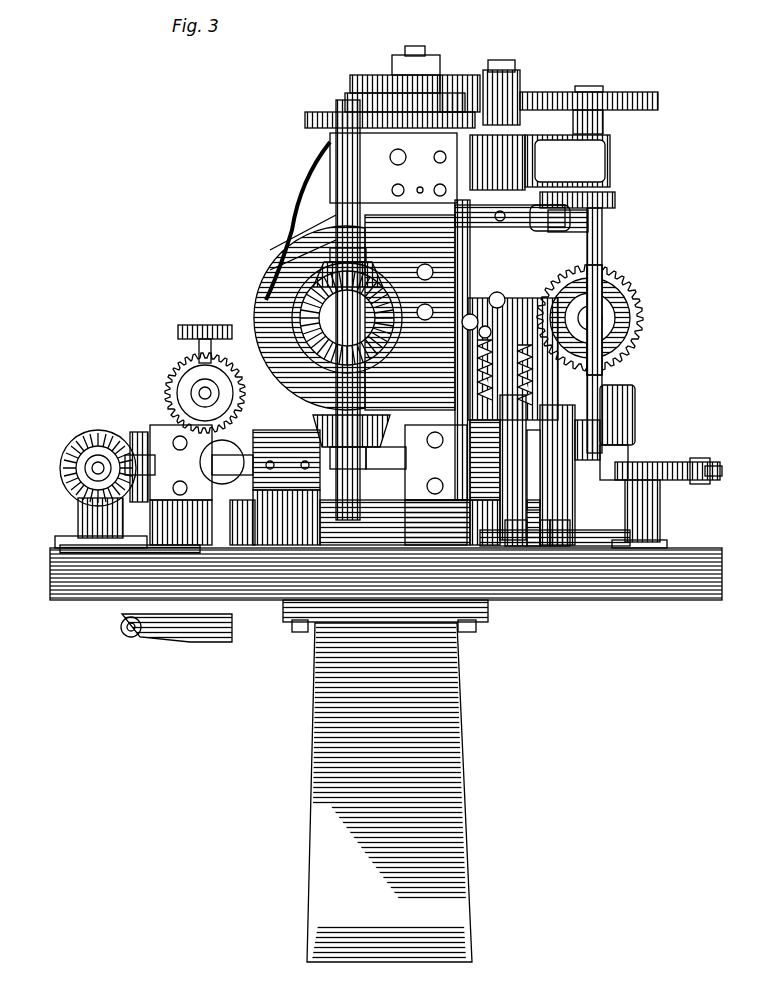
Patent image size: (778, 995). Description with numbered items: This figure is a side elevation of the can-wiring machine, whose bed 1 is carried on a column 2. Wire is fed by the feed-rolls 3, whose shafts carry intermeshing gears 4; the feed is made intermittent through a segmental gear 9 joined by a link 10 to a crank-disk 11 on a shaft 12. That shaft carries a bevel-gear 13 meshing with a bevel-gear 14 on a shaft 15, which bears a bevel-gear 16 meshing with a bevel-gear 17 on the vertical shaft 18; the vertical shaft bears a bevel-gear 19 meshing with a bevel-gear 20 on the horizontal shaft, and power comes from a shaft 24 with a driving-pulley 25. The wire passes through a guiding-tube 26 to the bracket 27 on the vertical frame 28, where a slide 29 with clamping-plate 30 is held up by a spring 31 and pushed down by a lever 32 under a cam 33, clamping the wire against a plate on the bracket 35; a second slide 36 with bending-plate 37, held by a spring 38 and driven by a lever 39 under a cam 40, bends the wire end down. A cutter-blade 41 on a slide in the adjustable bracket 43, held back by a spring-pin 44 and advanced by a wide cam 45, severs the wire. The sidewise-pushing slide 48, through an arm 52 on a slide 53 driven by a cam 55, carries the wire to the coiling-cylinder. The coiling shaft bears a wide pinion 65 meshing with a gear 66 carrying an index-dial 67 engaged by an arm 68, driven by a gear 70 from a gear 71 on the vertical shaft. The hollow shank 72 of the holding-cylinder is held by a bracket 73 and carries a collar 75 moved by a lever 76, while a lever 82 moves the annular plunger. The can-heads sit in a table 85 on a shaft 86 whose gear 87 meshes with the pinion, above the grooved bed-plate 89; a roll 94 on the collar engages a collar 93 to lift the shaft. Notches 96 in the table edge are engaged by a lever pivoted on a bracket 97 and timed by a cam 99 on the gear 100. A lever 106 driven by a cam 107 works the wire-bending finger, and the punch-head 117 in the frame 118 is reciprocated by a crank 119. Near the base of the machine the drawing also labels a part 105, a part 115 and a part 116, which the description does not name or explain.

The bed 1 is at (685, 590).
The column 2 is at (455, 775).
The feed-rolls 3 is at (176, 382).
The intermeshing gears 4 is at (252, 425).
The segmental gear 9 is at (178, 622).
The link 10 is at (120, 606).
The crank-disk 11 is at (84, 434).
The shaft 12 is at (58, 448).
The bevel-gear 13 is at (58, 470).
The bevel-gear 14 is at (138, 434).
The shaft 15 is at (370, 465).
The bevel-gear 16 is at (376, 548).
The bevel-gear 17 is at (350, 455).
The vertical shaft 18 is at (300, 240).
The bevel-gear 19 is at (292, 263).
The bevel-gear 20 is at (262, 298).
The shaft 24 is at (345, 205).
The driving-pulley 25 is at (306, 172).
The guiding-tube 26 is at (328, 308).
The bracket 27 is at (455, 324).
The vertical frame 28 is at (340, 218).
The slide 29 is at (497, 370).
The clamping-plate 30 is at (436, 462).
The spring 31 is at (497, 324).
The lever 32 is at (455, 290).
The cam 33 is at (268, 322).
The bracket 35 is at (490, 545).
The slide 36 is at (538, 373).
The bending-plate 37 is at (575, 420).
The spring 38 is at (510, 356).
The lever 39 is at (393, 178).
The cam 40 is at (202, 321).
The cutter-blade 41 is at (294, 472).
The bracket 43 is at (272, 520).
The spring-pin 44 is at (282, 432).
The cam 45 is at (322, 500).
The sidewise-pushing slide 48 is at (476, 480).
The arm 52 is at (436, 522).
The slide 53 is at (478, 500).
The cam 55 is at (524, 546).
The wide pinion 65 is at (518, 74).
The gear 66 is at (484, 88).
The index-dial 67 is at (468, 76).
The arm 68 is at (380, 78).
The gear 70 is at (412, 50).
The gear 71 is at (320, 112).
The hollow shank 72 is at (550, 98).
The bracket 73 is at (596, 160).
The collar 75 is at (550, 207).
The lever 76 is at (508, 207).
The lever 82 is at (431, 261).
The table 85 is at (714, 462).
The shaft 86 is at (604, 240).
The gear 87 is at (656, 94).
The bed-plate 89 is at (706, 478).
The collar 93 is at (612, 196).
The roll 94 is at (602, 218).
The notches 96 is at (692, 458).
The bracket 97 is at (616, 390).
The cam 99 is at (632, 306).
The gear 100 is at (642, 330).
The pin 105 is at (544, 548).
The lever 106 is at (560, 548).
The cam 107 is at (584, 548).
The plate 115 is at (536, 548).
The disc 116 is at (512, 467).
The punch-head 117 is at (626, 452).
The frame 118 is at (612, 406).
The crank 119 is at (626, 278).